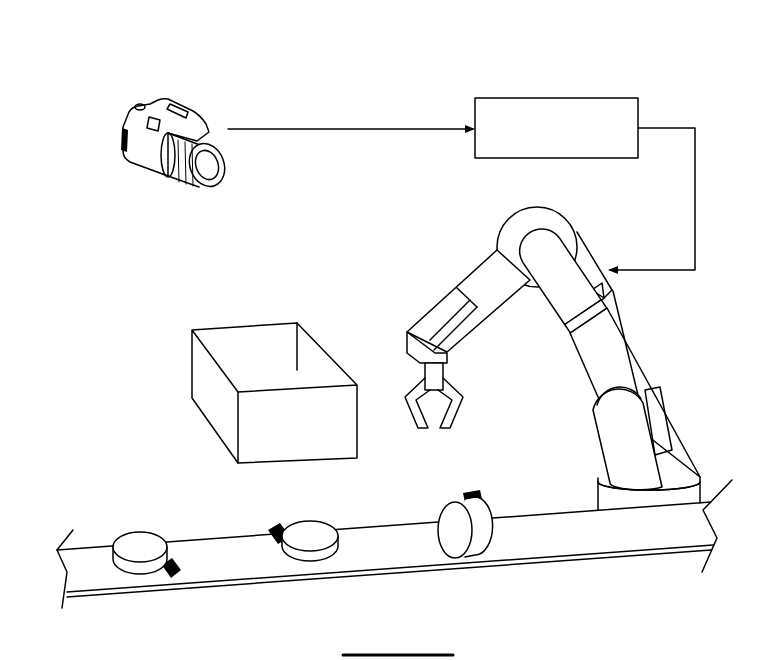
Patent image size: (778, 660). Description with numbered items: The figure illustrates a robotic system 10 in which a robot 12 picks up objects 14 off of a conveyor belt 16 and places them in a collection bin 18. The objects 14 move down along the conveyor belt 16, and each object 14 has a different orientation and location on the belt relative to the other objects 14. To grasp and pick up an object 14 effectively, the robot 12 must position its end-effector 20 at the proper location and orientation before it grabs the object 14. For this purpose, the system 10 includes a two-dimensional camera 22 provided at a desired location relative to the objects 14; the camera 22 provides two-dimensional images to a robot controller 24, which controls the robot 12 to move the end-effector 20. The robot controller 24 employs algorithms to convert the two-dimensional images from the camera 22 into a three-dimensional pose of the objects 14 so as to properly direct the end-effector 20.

The robotic system 10 is at (457, 44).
The robot 12 is at (641, 337).
The objects 14 is at (293, 522).
The conveyor belt 16 is at (548, 548).
The collection bin 18 is at (217, 327).
The end-effector 20 is at (447, 380).
The 2D camera 22 is at (126, 114).
The robot controller 24 is at (622, 98).